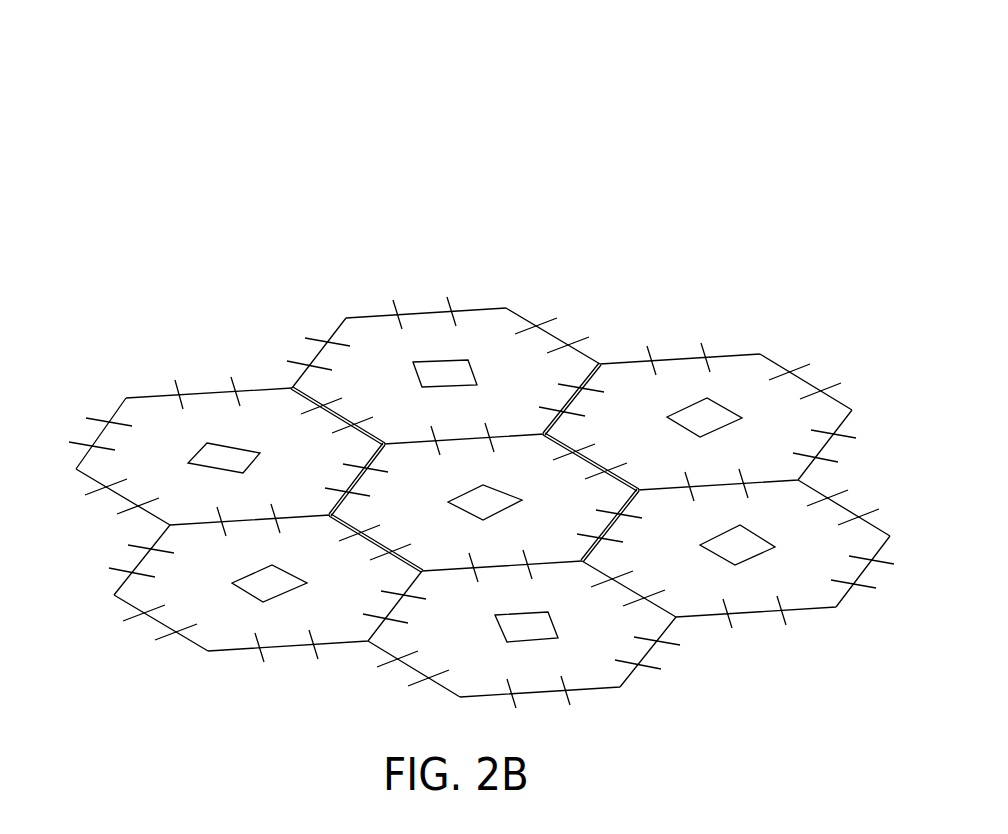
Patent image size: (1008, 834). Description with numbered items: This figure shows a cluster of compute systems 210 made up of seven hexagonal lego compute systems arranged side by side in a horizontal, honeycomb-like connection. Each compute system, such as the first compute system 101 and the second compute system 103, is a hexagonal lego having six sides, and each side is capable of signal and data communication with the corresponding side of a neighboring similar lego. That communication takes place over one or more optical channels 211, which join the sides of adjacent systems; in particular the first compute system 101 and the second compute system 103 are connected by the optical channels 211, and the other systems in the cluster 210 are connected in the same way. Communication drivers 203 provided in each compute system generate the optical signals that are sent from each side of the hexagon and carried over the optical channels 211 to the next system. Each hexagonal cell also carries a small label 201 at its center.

The cluster of compute systems 210 is at (175, 130).
The first compute system 101 is at (155, 450).
The second compute system 103 is at (433, 335).
The cell region 201 is at (463, 355).
The communication driver 203 is at (352, 340).
The optical channel 211 is at (287, 388).